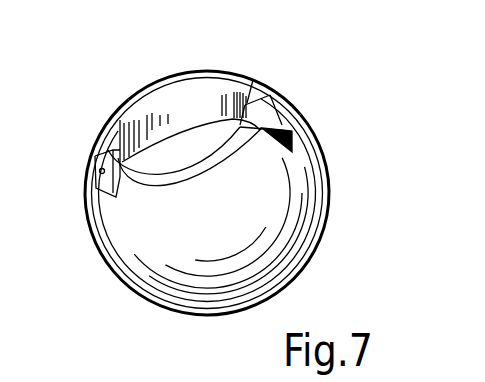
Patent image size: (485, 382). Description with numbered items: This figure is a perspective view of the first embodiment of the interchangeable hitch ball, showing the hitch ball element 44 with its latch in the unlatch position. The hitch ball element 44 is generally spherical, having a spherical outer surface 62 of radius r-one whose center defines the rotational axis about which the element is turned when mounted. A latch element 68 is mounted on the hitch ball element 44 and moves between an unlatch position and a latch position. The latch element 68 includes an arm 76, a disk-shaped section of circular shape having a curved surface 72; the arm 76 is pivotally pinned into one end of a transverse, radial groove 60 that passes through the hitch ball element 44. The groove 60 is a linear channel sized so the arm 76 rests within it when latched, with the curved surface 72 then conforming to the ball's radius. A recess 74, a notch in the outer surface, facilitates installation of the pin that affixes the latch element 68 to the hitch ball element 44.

The hitch ball element 44 is at (306, 97).
The groove 60 is at (290, 120).
The spherical outer surface 62 is at (273, 237).
The latch element 68 is at (223, 62).
The curved surface 72 is at (178, 72).
The recess 74 is at (95, 194).
The arm 76 is at (210, 100).